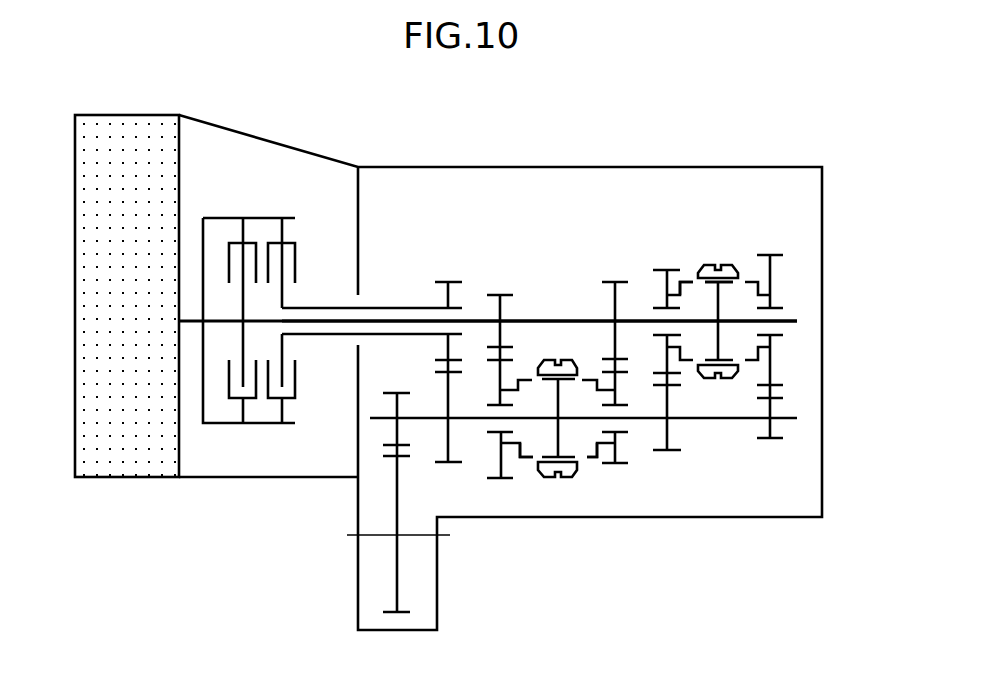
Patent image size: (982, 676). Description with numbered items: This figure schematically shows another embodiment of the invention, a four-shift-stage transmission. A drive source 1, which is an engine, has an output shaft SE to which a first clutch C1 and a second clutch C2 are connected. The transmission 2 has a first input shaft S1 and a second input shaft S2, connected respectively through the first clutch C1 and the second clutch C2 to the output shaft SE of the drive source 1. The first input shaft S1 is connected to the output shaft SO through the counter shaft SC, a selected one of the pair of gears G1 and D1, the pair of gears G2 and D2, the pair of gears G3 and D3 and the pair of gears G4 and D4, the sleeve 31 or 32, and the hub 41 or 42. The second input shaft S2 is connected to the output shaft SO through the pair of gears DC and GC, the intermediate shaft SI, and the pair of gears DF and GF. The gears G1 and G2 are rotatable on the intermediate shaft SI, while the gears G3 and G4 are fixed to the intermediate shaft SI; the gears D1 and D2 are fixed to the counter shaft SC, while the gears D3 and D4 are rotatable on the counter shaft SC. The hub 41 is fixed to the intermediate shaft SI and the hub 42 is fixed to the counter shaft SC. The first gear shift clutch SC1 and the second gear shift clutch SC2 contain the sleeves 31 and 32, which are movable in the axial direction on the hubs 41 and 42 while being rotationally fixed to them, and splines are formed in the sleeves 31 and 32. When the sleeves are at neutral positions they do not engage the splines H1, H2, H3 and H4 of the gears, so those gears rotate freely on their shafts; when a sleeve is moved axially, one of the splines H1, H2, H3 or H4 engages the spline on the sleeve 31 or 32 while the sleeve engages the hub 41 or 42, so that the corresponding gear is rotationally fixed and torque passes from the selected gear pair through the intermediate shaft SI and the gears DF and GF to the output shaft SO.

The drive source 1 is at (128, 115).
The transmission 2 is at (408, 166).
The output shaft of the drive source SE is at (195, 321).
The first input shaft S1 is at (335, 320).
The second input shaft S2 is at (312, 308).
The first clutch C1 is at (233, 402).
The second clutch C2 is at (273, 402).
The gear DF is at (393, 502).
The transmission output shaft SO is at (347, 537).
The gear GF is at (397, 583).
The counter drive gear DC is at (440, 282).
The gear GC is at (440, 465).
The first shift stage drive gear D1 is at (505, 296).
The second shift stage drive gear D2 is at (620, 282).
The third shift stage drive gear D3 is at (663, 268).
The fourth shift stage drive gear D4 is at (772, 255).
The first shift stage driven gear G1 is at (492, 480).
The second shift stage driven gear G2 is at (622, 465).
The third shift stage driven gear G3 is at (670, 453).
The fourth shift stage driven gear G4 is at (775, 440).
The counter shaft SC is at (563, 320).
The intermediate shaft SI is at (715, 420).
The hub 41 is at (558, 400).
The hub 42 is at (718, 303).
The sleeve 31 is at (570, 478).
The sleeve 32 is at (728, 265).
The spline H1 is at (532, 458).
The spline H2 is at (588, 458).
The spline H3 is at (694, 275).
The spline H4 is at (747, 275).
The first gear shift clutch SC1 is at (635, 610).
The second gear shift clutch SC2 is at (653, 128).